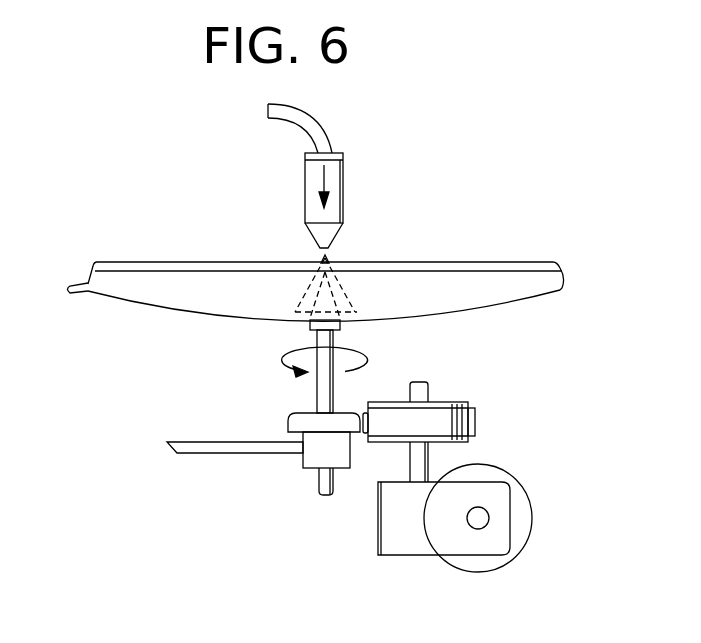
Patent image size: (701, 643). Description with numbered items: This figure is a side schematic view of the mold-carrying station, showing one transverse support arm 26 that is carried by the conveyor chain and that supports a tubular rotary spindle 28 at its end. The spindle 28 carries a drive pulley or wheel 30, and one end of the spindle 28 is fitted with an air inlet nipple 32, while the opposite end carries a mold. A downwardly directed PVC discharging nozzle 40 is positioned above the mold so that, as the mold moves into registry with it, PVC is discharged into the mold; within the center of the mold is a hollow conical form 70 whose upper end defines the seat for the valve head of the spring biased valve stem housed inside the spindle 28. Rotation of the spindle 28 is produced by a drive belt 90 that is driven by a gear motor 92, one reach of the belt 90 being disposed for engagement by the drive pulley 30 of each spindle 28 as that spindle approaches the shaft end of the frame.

The support arm 26 is at (192, 454).
The rotary spindle 28 is at (318, 398).
The drive pulley or wheel 30 is at (290, 418).
The air inlet nipple 32 is at (320, 481).
The PVC discharging nozzle 40 is at (343, 180).
The hollow conical form 70 is at (332, 306).
The drive belt 90 is at (475, 422).
The gear motor 92 is at (525, 520).